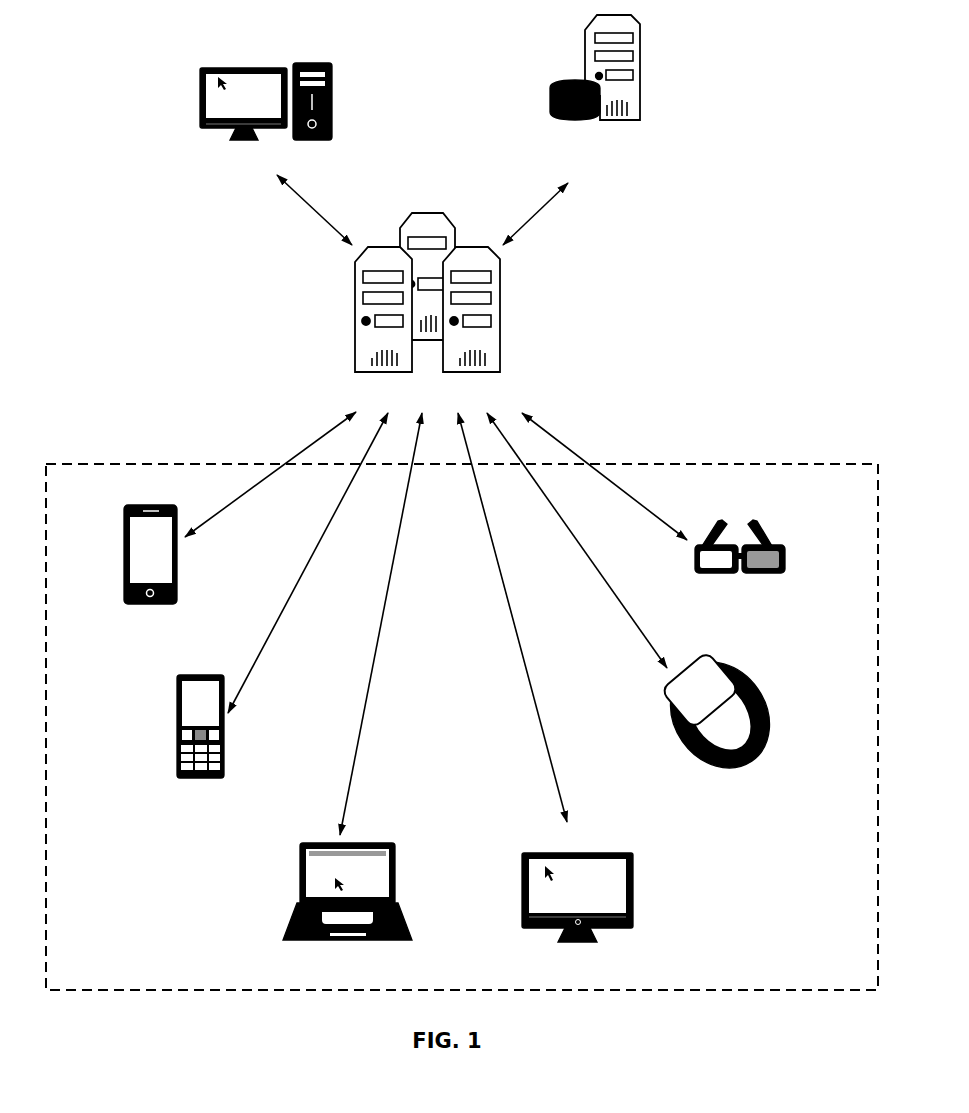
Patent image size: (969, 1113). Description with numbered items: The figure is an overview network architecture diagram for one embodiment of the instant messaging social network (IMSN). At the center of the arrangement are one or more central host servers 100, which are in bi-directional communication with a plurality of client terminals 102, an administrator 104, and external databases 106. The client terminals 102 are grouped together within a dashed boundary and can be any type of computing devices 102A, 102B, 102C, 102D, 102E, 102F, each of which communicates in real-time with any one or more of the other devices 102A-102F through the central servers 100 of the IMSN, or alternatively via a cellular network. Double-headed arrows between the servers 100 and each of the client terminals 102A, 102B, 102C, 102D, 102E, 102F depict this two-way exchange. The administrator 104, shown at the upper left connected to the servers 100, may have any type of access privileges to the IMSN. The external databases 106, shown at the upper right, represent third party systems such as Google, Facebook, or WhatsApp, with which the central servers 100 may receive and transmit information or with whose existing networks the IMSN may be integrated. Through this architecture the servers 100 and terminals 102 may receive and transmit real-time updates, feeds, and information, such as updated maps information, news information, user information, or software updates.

The central host servers 100 is at (355, 350).
The client terminals 102 is at (65, 953).
The computing device 102A is at (124, 585).
The computing device 102B is at (177, 758).
The computing device 102C is at (296, 920).
The computing device 102D is at (632, 920).
The computing device 102E is at (765, 725).
The computing device 102F is at (787, 567).
The administrator 104 is at (200, 97).
The external databases 106 is at (642, 97).